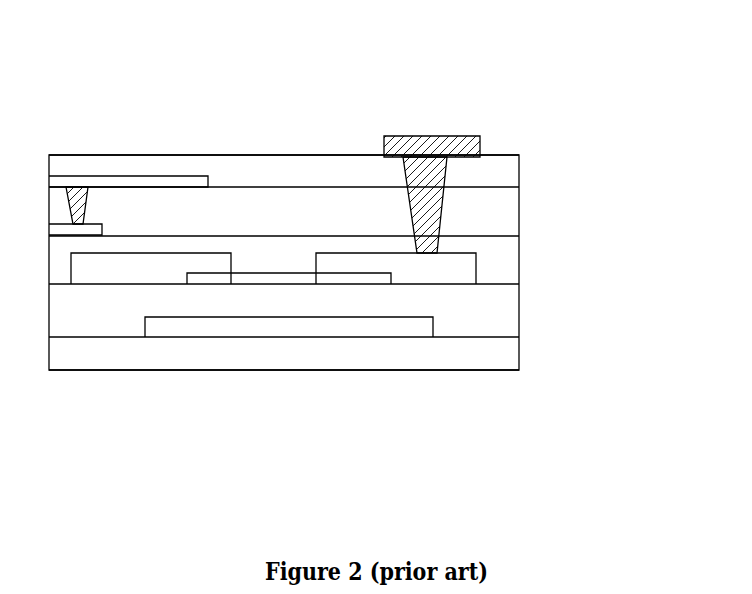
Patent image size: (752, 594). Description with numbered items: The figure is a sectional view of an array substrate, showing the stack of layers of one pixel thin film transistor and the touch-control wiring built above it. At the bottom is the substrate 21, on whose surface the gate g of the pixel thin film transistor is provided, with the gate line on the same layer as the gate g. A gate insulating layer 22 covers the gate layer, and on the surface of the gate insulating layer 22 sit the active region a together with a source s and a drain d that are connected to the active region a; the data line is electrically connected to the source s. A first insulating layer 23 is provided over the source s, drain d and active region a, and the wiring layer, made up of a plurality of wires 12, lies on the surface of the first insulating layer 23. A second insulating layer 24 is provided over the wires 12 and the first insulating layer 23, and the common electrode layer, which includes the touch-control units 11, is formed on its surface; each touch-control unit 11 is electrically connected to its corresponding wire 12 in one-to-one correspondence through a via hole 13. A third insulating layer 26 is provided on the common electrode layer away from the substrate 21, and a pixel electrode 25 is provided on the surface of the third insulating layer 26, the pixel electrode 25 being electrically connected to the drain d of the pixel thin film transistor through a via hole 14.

The third insulating layer 26 is at (310, 155).
The touch-control unit 11 is at (183, 176).
The second insulating layer 24 is at (489, 222).
The via hole 13 is at (80, 190).
The wire 12 is at (100, 222).
The pixel electrode 25 is at (433, 137).
The via hole 14 is at (443, 203).
The first insulating layer 23 is at (495, 264).
The gate insulating layer 22 is at (507, 312).
The substrate 21 is at (207, 353).
The source s is at (117, 263).
The drain d is at (447, 266).
The active region a is at (358, 285).
The gate g is at (294, 327).